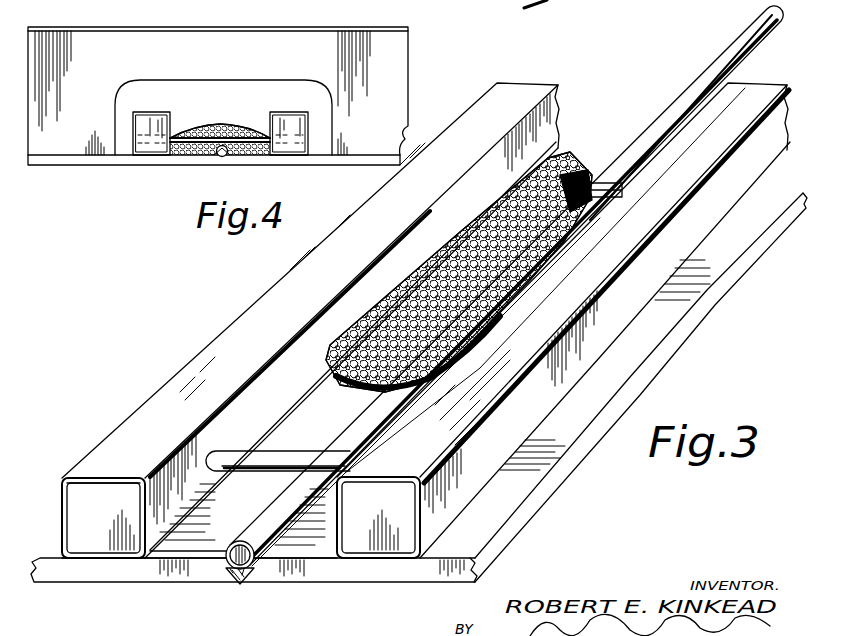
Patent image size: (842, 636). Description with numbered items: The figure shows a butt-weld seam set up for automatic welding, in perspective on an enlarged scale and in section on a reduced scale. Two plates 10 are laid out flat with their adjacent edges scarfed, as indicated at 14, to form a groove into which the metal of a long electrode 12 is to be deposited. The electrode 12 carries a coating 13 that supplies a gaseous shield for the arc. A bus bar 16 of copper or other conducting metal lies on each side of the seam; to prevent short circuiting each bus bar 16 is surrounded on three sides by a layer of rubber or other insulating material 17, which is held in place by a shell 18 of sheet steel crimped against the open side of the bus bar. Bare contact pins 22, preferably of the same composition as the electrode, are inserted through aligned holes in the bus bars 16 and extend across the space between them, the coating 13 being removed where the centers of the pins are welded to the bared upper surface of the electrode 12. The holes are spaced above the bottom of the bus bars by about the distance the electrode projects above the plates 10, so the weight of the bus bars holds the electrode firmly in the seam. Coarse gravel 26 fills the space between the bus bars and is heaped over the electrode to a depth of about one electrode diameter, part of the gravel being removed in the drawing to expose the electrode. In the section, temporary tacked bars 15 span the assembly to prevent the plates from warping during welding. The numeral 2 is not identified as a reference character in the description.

In FIG. 4, the strip bar 2 is at (200, 134).
In FIG. 4, the plate 10 is at (92, 160).
In FIG. 3, the plate 10 is at (137, 576).
In FIG. 4, the electrode 12 is at (236, 160).
In FIG. 3, the electrode 12 is at (236, 574).
In FIG. 3, the coating 13 is at (221, 565).
In FIG. 4, the scarfed edge 14 is at (216, 160).
In FIG. 3, the scarfed edge 14 is at (245, 583).
In FIG. 4, the temporary tacked bar 15 is at (385, 70).
In FIG. 4, the bus bar 16 is at (150, 127).
In FIG. 3, the bus bar 16 is at (95, 497).
In FIG. 3, the insulating material 17 is at (67, 515).
In FIG. 3, the shell 18 is at (63, 535).
In FIG. 3, the contact pin 22 is at (280, 460).
In FIG. 4, the gravel 26 is at (236, 130).
In FIG. 3, the gravel 26 is at (445, 246).